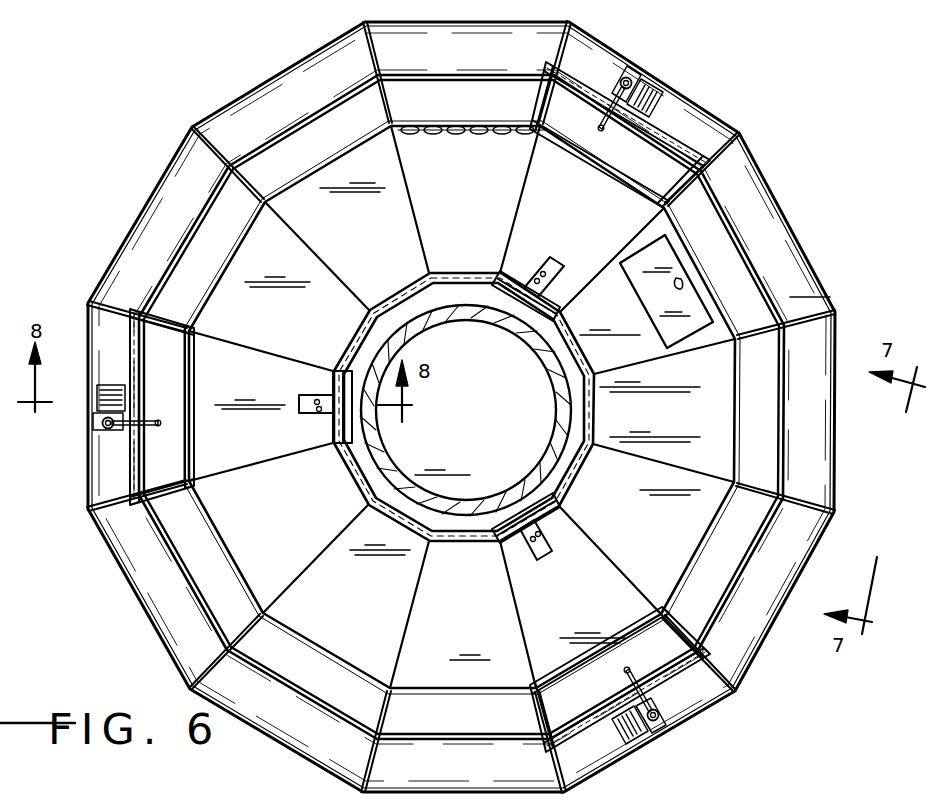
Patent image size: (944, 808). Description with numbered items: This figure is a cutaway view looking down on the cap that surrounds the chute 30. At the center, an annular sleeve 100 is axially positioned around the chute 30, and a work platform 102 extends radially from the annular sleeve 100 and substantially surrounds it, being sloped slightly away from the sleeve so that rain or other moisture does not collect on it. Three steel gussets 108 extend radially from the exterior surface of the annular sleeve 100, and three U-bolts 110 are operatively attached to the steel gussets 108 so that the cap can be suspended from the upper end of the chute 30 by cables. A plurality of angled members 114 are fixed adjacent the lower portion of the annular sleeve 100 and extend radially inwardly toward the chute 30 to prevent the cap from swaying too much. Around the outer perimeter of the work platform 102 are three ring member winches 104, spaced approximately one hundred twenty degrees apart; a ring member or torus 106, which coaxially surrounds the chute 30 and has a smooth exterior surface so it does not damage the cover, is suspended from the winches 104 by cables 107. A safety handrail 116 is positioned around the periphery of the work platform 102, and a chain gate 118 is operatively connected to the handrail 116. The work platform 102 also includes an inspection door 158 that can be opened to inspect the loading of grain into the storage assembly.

The chute 30 is at (543, 348).
The annular sleeve 100 is at (423, 286).
The work platform 102 is at (367, 604).
The ring member winches 104 is at (96, 446).
The torus 106 is at (128, 598).
The cables 107 is at (641, 748).
The steel gussets 108 is at (444, 406).
The U-bolts 110 is at (330, 413).
The angled members 114 is at (346, 363).
The safety handrail 116 is at (243, 557).
The chain gate 118 is at (437, 134).
The inspection door 158 is at (705, 308).